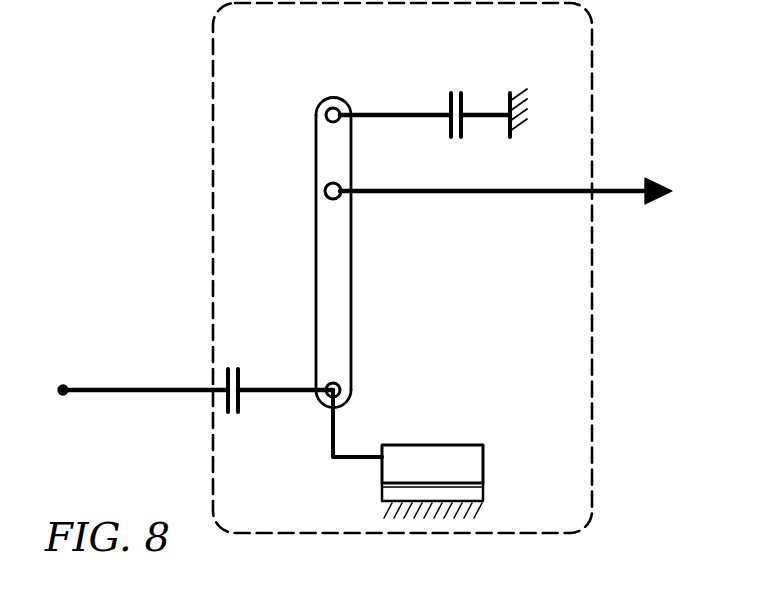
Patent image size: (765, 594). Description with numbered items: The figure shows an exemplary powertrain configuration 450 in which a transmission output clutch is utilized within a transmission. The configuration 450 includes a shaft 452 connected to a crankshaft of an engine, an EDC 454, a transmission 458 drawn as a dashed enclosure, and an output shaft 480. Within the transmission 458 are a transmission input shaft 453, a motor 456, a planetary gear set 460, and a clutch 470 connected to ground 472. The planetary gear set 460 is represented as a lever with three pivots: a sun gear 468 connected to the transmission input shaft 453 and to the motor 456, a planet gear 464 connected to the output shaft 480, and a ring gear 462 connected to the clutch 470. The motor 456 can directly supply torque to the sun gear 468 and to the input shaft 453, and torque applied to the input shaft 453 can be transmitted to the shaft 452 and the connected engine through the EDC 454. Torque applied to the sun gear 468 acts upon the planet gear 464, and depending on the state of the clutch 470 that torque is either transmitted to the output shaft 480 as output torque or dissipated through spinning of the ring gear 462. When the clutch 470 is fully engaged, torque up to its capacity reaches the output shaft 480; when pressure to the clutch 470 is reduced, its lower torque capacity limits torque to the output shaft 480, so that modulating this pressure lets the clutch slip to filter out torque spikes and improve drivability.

The configuration 450 is at (110, 133).
The shaft 452 is at (165, 385).
The transmission input shaft 453 is at (293, 387).
The EDC 454 is at (232, 415).
The motor 456 is at (488, 461).
The transmission 458 is at (592, 83).
The planetary gear set 460 is at (318, 92).
The ring gear 462 is at (315, 118).
The planet gear 464 is at (315, 193).
The sun gear 468 is at (351, 388).
The clutch 470 is at (457, 87).
The ground 472 is at (531, 100).
The output shaft 480 is at (607, 193).